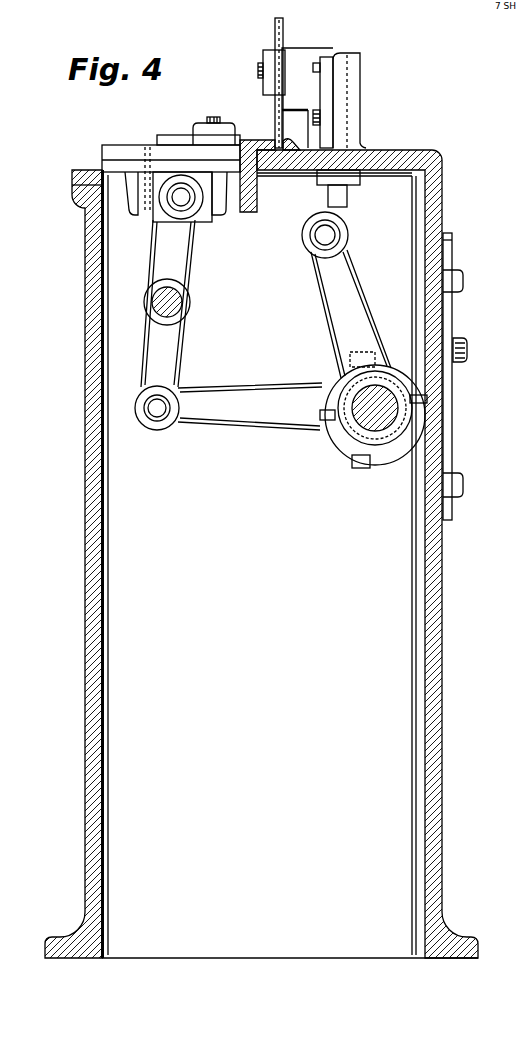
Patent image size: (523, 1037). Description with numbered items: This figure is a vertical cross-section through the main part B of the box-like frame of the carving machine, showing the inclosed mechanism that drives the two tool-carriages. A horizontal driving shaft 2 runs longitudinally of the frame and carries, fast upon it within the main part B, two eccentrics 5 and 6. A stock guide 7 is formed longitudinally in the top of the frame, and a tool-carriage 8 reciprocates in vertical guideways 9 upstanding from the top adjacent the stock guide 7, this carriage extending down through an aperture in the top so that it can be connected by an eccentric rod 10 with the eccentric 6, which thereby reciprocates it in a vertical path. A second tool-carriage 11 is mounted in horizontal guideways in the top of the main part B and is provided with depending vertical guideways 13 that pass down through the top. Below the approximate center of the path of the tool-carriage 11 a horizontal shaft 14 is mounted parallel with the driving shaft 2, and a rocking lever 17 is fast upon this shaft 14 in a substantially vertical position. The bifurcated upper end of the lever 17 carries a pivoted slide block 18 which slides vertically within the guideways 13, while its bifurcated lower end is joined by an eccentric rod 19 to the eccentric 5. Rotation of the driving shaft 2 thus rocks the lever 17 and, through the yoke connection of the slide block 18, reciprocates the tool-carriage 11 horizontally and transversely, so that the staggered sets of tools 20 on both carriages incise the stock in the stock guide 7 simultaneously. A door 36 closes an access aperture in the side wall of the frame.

The main part of the frame B is at (100, 632).
The driving shaft 2 is at (378, 418).
The eccentric 5 is at (330, 437).
The eccentric 6 is at (363, 437).
The stock guide 7 is at (297, 148).
The tool-carriage 8 is at (303, 58).
The vertical guideways 9 is at (338, 68).
The eccentric rod 10 is at (338, 272).
The tool-carriage 11 is at (133, 150).
The depending vertical guideways 13 is at (132, 217).
The horizontal shaft 14 is at (175, 300).
The rocking lever 17 is at (170, 338).
The slide block 18 is at (203, 188).
The eccentric rod 19 is at (242, 408).
The tools 20 is at (285, 43).
The door 36 is at (445, 370).